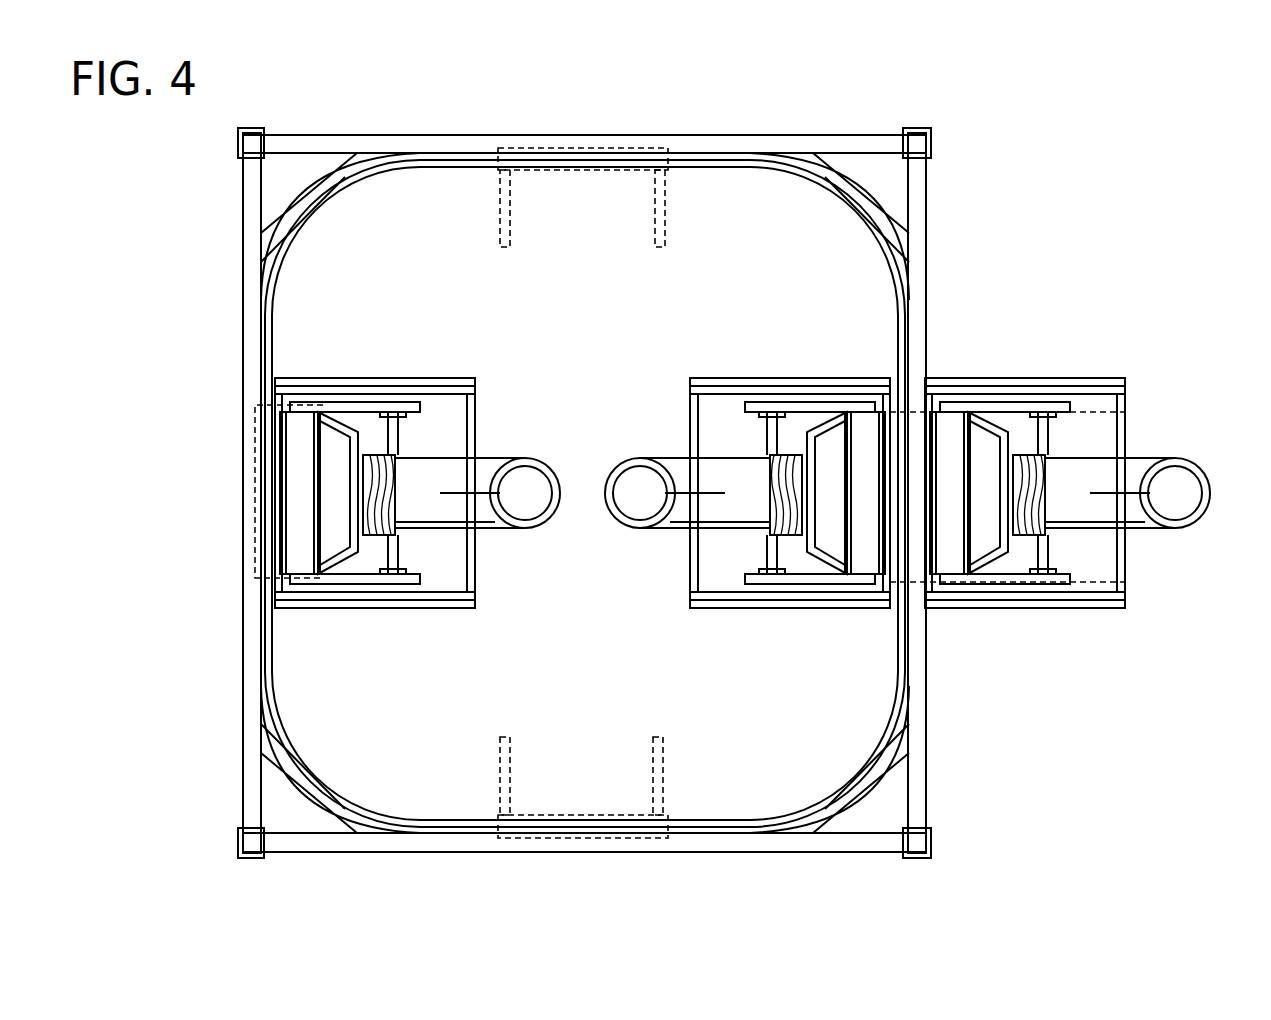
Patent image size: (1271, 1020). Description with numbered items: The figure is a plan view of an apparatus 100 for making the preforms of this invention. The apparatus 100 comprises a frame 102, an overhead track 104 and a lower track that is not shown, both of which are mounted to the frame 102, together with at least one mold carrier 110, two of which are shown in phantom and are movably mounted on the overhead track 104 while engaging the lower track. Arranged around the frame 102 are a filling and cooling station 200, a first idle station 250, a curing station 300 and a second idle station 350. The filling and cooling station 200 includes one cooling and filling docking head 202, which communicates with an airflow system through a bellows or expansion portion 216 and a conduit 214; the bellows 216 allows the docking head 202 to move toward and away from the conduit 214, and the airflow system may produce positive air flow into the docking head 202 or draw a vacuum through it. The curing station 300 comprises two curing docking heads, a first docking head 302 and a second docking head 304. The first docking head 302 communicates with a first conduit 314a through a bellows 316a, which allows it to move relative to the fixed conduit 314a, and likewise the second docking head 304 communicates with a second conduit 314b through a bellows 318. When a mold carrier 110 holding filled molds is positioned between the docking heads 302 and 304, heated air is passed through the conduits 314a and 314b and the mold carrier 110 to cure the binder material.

The apparatus 100 is at (698, 477).
The frame 102 is at (862, 134).
The overhead track 104 is at (372, 165).
The mold carrier 110 is at (580, 172).
The filling and cooling station 200 is at (315, 460).
The cooling and filling docking head 202 is at (303, 437).
The conduit 214 is at (498, 457).
The bellows 216 is at (400, 510).
The first idle station 250 is at (585, 120).
The curing station 300 is at (908, 461).
The first docking head 302 is at (858, 438).
The second docking head 304 is at (958, 556).
The first conduit 314a is at (685, 455).
The second conduit 314b is at (1152, 462).
The bellows 316a is at (762, 515).
The bellows 318 is at (1048, 483).
The second idle station 350 is at (595, 870).